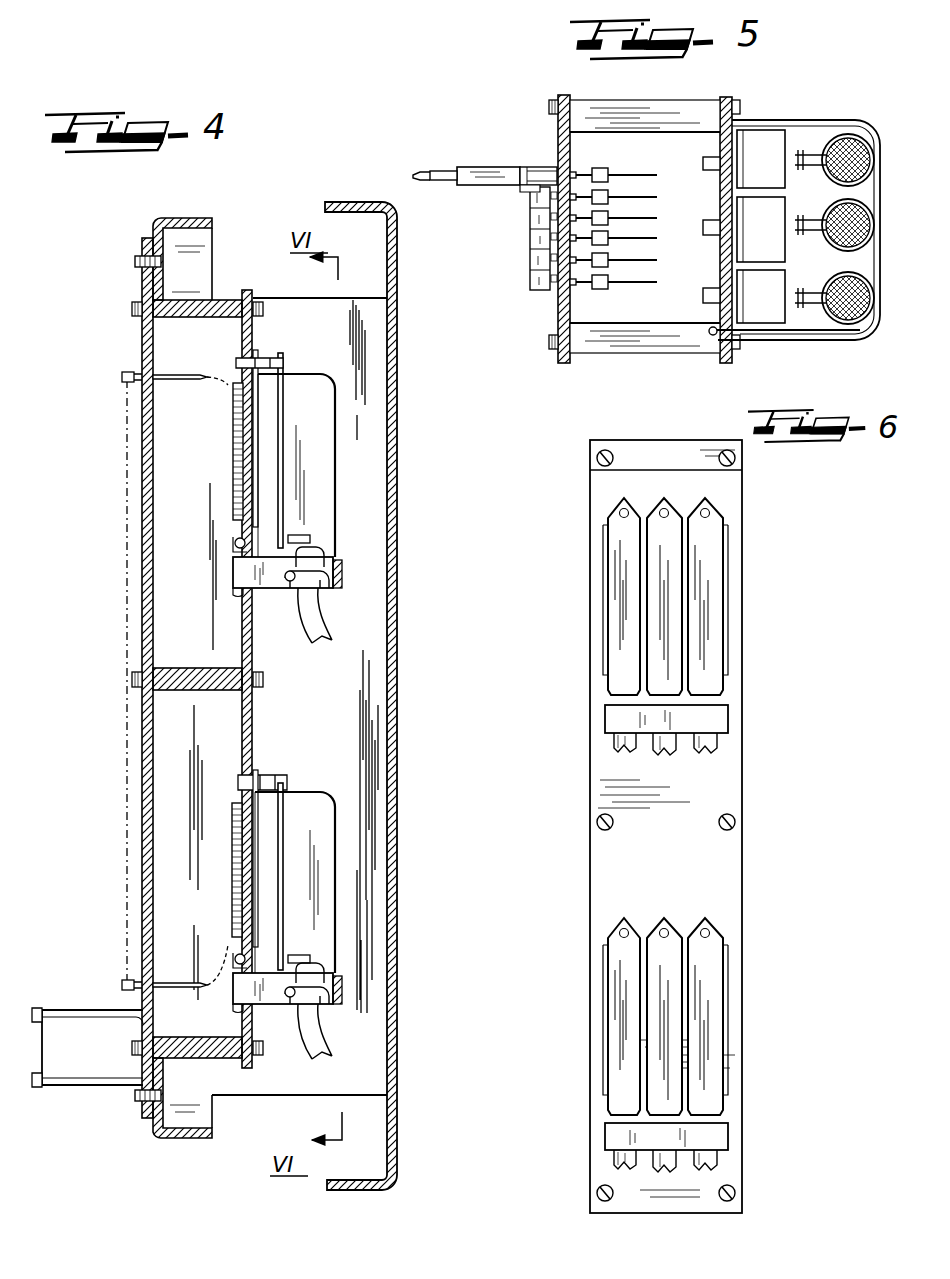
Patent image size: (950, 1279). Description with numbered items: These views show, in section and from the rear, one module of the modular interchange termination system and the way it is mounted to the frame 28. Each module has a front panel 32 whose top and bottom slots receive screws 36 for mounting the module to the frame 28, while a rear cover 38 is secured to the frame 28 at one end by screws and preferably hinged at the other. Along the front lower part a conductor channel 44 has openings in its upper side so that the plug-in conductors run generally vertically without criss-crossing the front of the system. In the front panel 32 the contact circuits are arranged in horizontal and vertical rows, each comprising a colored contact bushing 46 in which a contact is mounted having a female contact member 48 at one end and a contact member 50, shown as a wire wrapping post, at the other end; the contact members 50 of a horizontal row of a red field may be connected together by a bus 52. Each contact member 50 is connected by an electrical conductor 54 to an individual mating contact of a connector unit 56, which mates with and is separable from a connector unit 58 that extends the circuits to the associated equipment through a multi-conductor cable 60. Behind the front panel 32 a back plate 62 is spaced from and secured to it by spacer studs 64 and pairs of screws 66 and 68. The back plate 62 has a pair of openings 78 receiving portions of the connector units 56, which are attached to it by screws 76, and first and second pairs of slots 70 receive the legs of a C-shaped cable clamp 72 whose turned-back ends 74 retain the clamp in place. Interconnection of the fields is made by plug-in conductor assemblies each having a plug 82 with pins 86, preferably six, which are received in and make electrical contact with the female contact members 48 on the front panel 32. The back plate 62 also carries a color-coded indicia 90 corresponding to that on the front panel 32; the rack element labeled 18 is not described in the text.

In FIG. 4, the toothed rack 18 is at (238, 508).
In FIG. 4, the frame 28 is at (197, 208).
In FIG. 4, the front panel 32 is at (142, 335).
In FIG. 5, the front panel 32 is at (572, 150).
In FIG. 4, the screws 36 is at (135, 259).
In FIG. 4, the rear cover 38 is at (398, 635).
In FIG. 4, the conductor channel 44 is at (58, 1010).
In FIG. 4, the contact bushing 46 is at (118, 380).
In FIG. 5, the contact bushing 46 is at (538, 292).
In FIG. 5, the female contact member 48 is at (540, 168).
In FIG. 4, the contact member 50 is at (188, 380).
In FIG. 5, the contact member 50 is at (648, 179).
In FIG. 5, the bus 52 is at (600, 290).
In FIG. 4, the electrical conductor 54 is at (222, 384).
In FIG. 4, the connector unit 56 is at (272, 392).
In FIG. 6, the connector unit 56 is at (676, 835).
In FIG. 4, the connector unit 58 is at (317, 385).
In FIG. 5, the connector unit 58 is at (799, 230).
In FIG. 6, the connector unit 58 is at (695, 620).
In FIG. 4, the multi-conductor cable 60 is at (335, 614).
In FIG. 4, the back plate 62 is at (255, 737).
In FIG. 6, the back plate 62 is at (740, 791).
In FIG. 4, the spacer studs 64 is at (206, 318).
In FIG. 5, the spacer studs 64 is at (665, 112).
In FIG. 4, the screws 66 is at (134, 690).
In FIG. 5, the screws 66 is at (556, 100).
In FIG. 4, the screws 68 is at (263, 1050).
In FIG. 5, the screws 68 is at (738, 112).
In FIG. 6, the screws 68 is at (594, 463).
In FIG. 4, the slots 70 is at (236, 590).
In FIG. 5, the slots 70 is at (736, 158).
In FIG. 4, the cable clamp 72 is at (270, 592).
In FIG. 5, the cable clamp 72 is at (785, 335).
In FIG. 6, the cable clamp 72 is at (715, 722).
In FIG. 4, the turned-back ends 74 is at (232, 572).
In FIG. 5, the turned-back ends 74 is at (710, 334).
In FIG. 4, the screws 76 is at (238, 543).
In FIG. 5, the screws 76 is at (740, 176).
In FIG. 6, the screws 76 is at (722, 515).
In FIG. 4, the openings 78 is at (240, 806).
In FIG. 6, the openings 78 is at (606, 670).
In FIG. 5, the plug 82 is at (480, 167).
In FIG. 5, the pins 86 is at (527, 185).
In FIG. 6, the indicia 90 is at (655, 450).